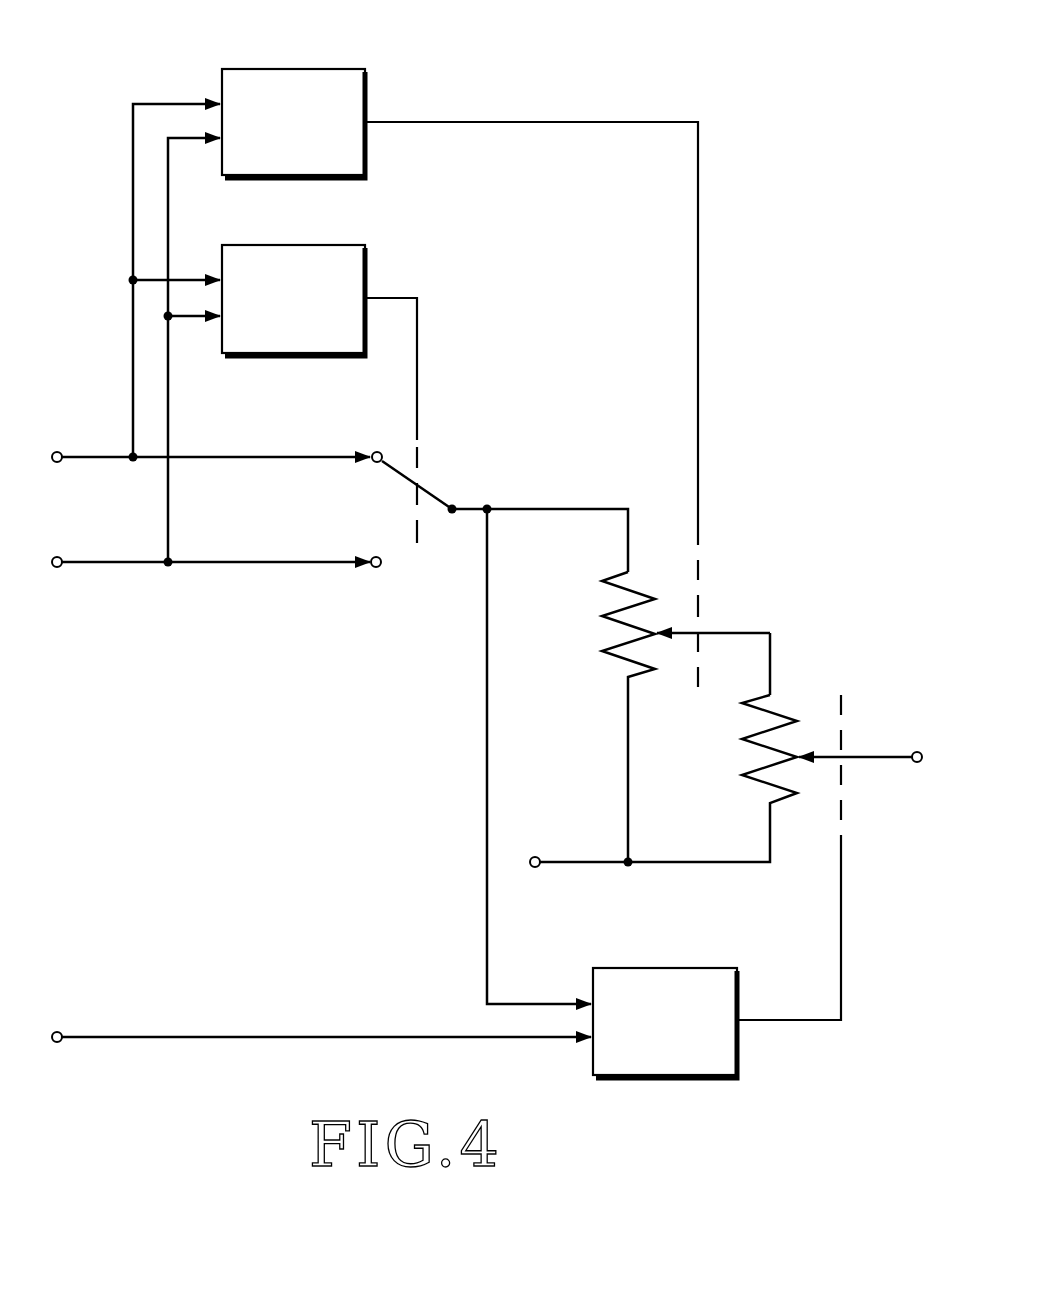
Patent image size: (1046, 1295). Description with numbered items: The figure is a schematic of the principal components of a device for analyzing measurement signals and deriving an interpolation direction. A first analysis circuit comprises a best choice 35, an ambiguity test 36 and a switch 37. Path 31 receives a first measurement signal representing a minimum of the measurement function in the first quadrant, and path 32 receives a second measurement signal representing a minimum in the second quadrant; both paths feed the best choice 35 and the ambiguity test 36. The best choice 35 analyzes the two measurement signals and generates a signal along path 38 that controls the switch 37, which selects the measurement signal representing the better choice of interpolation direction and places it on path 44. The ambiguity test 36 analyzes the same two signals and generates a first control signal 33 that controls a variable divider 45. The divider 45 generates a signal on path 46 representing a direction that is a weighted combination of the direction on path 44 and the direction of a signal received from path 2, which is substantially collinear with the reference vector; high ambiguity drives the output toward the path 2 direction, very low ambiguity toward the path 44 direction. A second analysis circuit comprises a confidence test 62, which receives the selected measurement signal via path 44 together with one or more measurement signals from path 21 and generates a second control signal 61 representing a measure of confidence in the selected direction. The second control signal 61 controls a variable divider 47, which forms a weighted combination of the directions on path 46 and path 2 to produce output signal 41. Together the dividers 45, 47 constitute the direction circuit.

The path 2 is at (588, 860).
The path 21 is at (147, 1037).
The path 31 is at (218, 455).
The path 32 is at (226, 560).
The first control signal 33 is at (543, 120).
The best choice 35 is at (288, 244).
The ambiguity test 36 is at (288, 68).
The switch 37 is at (452, 515).
The path 38 is at (417, 328).
The signal 41 is at (866, 755).
The path 44 is at (542, 507).
The variable divider 45 is at (628, 611).
The path 46 is at (727, 630).
The variable divider 47 is at (790, 705).
The second control signal 61 is at (773, 1018).
The confidence test 62 is at (659, 966).